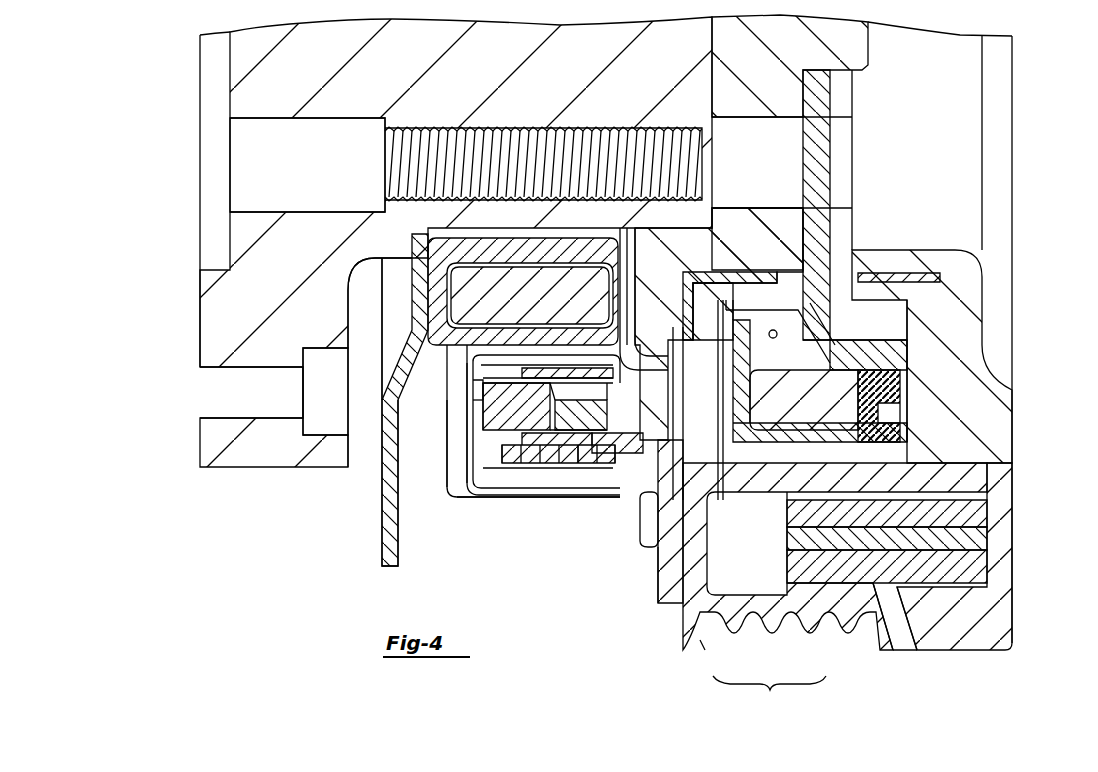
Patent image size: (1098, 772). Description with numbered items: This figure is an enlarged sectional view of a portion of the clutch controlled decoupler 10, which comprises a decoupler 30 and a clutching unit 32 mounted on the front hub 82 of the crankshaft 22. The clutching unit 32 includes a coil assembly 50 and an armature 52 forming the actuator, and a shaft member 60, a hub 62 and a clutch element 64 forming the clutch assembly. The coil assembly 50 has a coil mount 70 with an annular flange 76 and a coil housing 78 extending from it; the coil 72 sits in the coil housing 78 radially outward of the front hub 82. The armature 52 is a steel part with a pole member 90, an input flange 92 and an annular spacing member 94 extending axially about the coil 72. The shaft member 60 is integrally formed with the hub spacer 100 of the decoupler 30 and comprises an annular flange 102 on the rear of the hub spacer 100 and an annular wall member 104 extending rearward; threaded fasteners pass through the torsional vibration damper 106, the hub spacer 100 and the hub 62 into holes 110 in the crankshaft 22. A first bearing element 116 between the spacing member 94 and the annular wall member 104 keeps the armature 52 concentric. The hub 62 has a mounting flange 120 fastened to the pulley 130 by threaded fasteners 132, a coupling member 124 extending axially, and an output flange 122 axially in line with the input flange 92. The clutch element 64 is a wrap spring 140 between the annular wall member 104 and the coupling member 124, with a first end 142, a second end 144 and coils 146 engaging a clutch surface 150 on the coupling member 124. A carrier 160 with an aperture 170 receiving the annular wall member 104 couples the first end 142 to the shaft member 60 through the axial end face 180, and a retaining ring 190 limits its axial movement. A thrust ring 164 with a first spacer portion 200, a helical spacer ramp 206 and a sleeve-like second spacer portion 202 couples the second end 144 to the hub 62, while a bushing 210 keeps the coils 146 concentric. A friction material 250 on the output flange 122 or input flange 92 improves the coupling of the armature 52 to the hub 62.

The clutch controlled decoupler 10 is at (769, 692).
The crankshaft 22 is at (305, 232).
The decoupler 30 is at (895, 648).
The clutching unit 32 is at (665, 628).
The coil assembly 50 is at (300, 318).
The armature 52 is at (540, 365).
The shaft member 60 is at (750, 400).
The hub 62 is at (455, 500).
The clutch element 64 is at (615, 505).
The coil mount 70 is at (358, 412).
The coil 72 is at (400, 305).
The annular flange 76 is at (382, 545).
The coil housing 78 is at (440, 245).
The front hub 82 is at (480, 212).
The pole member 90 is at (690, 275).
The input flange 92 is at (452, 490).
The spacing member 94 is at (480, 380).
The hub spacer 100 is at (805, 117).
The annular flange 102 is at (858, 405).
The annular wall member 104 is at (556, 366).
The torsional vibration damper 106 is at (1000, 495).
The holes 110 is at (545, 128).
The first bearing element 116 is at (545, 365).
The mounting flange 120 is at (655, 595).
The output flange 122 is at (425, 360).
The coupling member 124 is at (550, 497).
The pulley 130 is at (770, 612).
The threaded fasteners 132 is at (640, 547).
The wrap spring 140 is at (535, 465).
The first end 142 is at (618, 433).
The second end 144 is at (510, 465).
The coils 146 is at (610, 465).
The clutch surface 150 is at (683, 470).
The carrier 160 is at (700, 480).
The thrust ring 164 is at (382, 440).
The aperture 170 is at (600, 380).
The axial end face 180 is at (683, 480).
The retaining ring 190 is at (580, 400).
The first spacer portion 200 is at (472, 395).
The second spacer portion 202 is at (472, 415).
The helical spacer ramp 206 is at (471, 480).
The bushing 210 is at (580, 465).
The friction material 250 is at (452, 455).